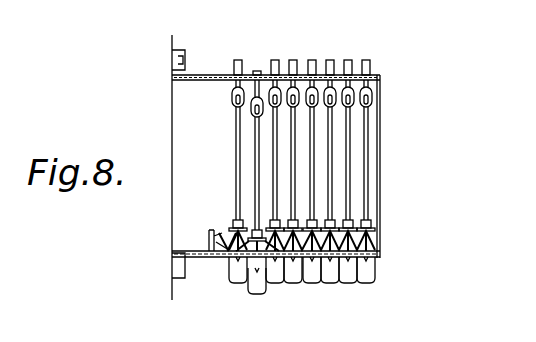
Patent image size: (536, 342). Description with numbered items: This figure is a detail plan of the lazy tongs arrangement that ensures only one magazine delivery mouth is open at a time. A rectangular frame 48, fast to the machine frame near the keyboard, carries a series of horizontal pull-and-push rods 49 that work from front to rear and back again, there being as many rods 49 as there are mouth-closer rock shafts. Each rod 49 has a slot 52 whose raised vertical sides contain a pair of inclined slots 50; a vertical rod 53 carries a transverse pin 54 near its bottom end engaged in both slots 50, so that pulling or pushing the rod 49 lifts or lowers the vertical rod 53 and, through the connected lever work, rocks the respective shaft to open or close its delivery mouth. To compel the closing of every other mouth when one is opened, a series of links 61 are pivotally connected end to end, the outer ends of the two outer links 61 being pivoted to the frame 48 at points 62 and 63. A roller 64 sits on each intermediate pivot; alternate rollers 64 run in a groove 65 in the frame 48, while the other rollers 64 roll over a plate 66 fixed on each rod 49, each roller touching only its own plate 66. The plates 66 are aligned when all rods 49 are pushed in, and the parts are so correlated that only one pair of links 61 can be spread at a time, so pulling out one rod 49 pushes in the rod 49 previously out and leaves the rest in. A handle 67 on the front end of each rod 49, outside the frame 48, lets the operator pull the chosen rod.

The rectangular frame 48 is at (213, 75).
The pull-and-push rod 49 is at (253, 167).
The inclined slot 50 is at (232, 97).
The slot 52 is at (331, 93).
The vertical rod 53 is at (236, 105).
The transverse pin 54 is at (263, 75).
The link 61 is at (228, 232).
The pivot point 62 is at (209, 234).
The pivot point 63 is at (380, 246).
The roller 64 is at (233, 219).
The groove 65 is at (224, 257).
The plate 66 is at (350, 229).
The handle 67 is at (233, 280).